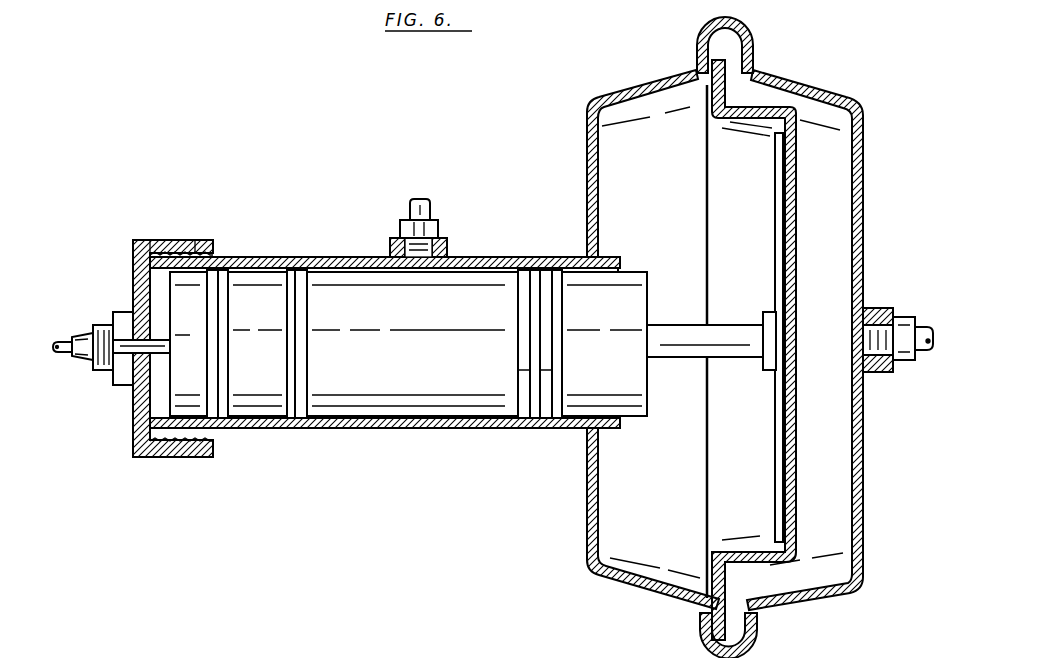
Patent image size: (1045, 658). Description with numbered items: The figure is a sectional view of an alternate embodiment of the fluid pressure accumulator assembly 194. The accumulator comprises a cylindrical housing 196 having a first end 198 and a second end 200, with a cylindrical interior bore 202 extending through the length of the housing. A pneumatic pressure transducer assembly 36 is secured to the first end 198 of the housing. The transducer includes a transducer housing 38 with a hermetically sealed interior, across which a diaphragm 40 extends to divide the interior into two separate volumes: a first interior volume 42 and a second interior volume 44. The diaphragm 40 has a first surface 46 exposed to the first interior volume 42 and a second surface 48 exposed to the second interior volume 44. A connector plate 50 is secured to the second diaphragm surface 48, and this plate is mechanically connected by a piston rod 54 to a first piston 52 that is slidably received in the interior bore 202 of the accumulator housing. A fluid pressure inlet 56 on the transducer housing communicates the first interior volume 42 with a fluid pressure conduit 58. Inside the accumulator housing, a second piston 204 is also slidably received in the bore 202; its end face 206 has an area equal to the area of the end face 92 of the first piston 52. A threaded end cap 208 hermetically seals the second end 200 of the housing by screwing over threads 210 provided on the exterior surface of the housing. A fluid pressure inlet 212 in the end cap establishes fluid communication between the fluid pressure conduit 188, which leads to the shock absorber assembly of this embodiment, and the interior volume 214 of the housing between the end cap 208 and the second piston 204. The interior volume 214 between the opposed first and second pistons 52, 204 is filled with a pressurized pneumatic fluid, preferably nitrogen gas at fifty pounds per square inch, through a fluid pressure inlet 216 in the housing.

The pneumatic pressure transducer assembly 36 is at (640, 594).
The transducer housing 38 is at (860, 135).
The diaphragm 40 is at (793, 165).
The first interior volume 42 is at (836, 228).
The second interior volume 44 is at (613, 157).
The first diaphragm surface 46 is at (796, 458).
The second diaphragm surface 48 is at (745, 563).
The connector plate 50 is at (773, 233).
The first piston 52 is at (645, 272).
The piston rod 54 is at (733, 348).
The fluid pressure inlet 56 is at (880, 372).
The fluid pressure conduit 58 is at (915, 325).
The end face 92 is at (518, 337).
The fluid pressure conduit 188 is at (60, 340).
The fluid pressure accumulator assembly 194 is at (413, 438).
The cylindrical housing 196 is at (470, 430).
The first end 198 is at (622, 430).
The second end 200 is at (133, 265).
The cylindrical interior bore 202 is at (476, 282).
The second piston 204 is at (268, 274).
The end face 206 is at (308, 355).
The threaded end cap 208 is at (180, 240).
The threads 210 is at (205, 240).
The fluid pressure inlet 212 is at (93, 368).
The interior volume 214 is at (180, 388).
The fluid pressure inlet 216 is at (445, 238).